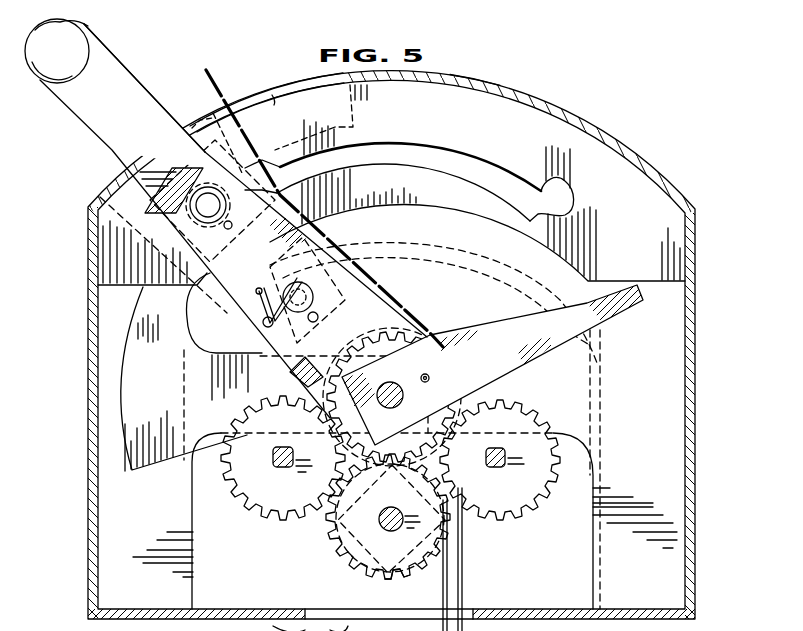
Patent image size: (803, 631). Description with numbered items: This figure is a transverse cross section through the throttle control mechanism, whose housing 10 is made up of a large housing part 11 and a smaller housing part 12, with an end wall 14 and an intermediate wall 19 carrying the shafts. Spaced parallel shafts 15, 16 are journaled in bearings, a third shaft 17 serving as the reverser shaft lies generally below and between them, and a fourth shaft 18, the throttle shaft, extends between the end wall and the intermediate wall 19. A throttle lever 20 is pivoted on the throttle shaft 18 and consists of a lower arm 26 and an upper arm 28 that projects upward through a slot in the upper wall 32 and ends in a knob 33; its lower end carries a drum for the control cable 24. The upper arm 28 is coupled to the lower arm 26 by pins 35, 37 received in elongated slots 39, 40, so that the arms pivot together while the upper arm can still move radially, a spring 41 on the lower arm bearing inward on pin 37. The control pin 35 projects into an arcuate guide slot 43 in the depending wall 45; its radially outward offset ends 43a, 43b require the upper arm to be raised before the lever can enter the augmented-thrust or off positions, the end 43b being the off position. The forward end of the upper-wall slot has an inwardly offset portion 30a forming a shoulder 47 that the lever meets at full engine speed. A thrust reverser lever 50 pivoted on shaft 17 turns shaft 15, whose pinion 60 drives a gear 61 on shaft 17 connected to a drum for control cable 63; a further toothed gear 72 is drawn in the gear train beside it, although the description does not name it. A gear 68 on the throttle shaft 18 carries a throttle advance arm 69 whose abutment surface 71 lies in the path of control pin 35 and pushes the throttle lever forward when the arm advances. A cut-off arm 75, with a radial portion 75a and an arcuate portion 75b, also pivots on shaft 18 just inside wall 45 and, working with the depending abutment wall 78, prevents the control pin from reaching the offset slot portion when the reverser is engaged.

The housing 10 is at (206, 70).
The large housing part 11 is at (696, 432).
The smaller housing part 12 is at (603, 428).
The end wall 14 is at (570, 582).
The shaft 15 is at (285, 468).
The shaft 16 is at (499, 470).
The third shaft 17 is at (390, 507).
The fourth shaft 18 is at (402, 384).
The intermediate wall 19 is at (573, 415).
The throttle lever assembly 20 is at (150, 132).
The control cable 24 is at (463, 580).
The lower arm 26 is at (373, 304).
The upper arm 28 is at (127, 73).
The inwardly offset slot portion 30a is at (258, 92).
The upper wall 32 is at (477, 72).
The knob 33 is at (42, 66).
The pin 35 is at (195, 172).
The pin 37 is at (315, 300).
The elongated slot 39 is at (232, 228).
The elongated slot 40 is at (317, 319).
The spring 41 is at (268, 290).
The arcuate guide slot 43 is at (388, 142).
The offset end portion of guide slot 43a is at (220, 124).
The offset end portion of guide slot 43b is at (564, 193).
The depending wall 45 is at (560, 126).
The shoulder 47 is at (276, 100).
The thrust reverser lever 50 is at (118, 232).
The pinion 60 is at (265, 516).
The gear 61 is at (341, 542).
The control cable 63 is at (446, 592).
The gear 68 is at (447, 426).
The throttle advance arm 69 is at (548, 352).
The abutment surface 71 is at (608, 296).
The gear 72 is at (509, 513).
The cut-off arm 75 is at (167, 445).
The radial portion 75a is at (258, 348).
The arcuate portion 75b is at (145, 296).
The depending abutment wall 78 is at (352, 113).